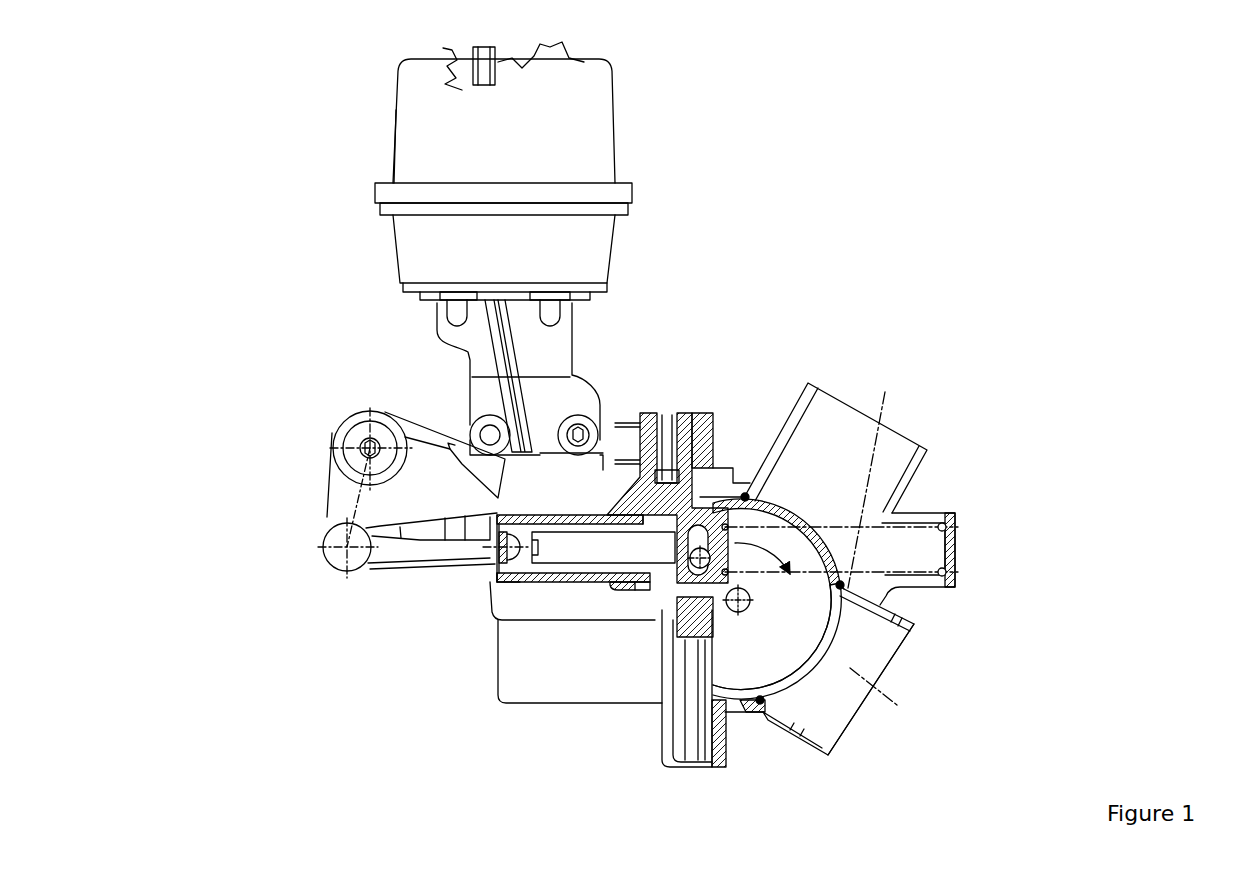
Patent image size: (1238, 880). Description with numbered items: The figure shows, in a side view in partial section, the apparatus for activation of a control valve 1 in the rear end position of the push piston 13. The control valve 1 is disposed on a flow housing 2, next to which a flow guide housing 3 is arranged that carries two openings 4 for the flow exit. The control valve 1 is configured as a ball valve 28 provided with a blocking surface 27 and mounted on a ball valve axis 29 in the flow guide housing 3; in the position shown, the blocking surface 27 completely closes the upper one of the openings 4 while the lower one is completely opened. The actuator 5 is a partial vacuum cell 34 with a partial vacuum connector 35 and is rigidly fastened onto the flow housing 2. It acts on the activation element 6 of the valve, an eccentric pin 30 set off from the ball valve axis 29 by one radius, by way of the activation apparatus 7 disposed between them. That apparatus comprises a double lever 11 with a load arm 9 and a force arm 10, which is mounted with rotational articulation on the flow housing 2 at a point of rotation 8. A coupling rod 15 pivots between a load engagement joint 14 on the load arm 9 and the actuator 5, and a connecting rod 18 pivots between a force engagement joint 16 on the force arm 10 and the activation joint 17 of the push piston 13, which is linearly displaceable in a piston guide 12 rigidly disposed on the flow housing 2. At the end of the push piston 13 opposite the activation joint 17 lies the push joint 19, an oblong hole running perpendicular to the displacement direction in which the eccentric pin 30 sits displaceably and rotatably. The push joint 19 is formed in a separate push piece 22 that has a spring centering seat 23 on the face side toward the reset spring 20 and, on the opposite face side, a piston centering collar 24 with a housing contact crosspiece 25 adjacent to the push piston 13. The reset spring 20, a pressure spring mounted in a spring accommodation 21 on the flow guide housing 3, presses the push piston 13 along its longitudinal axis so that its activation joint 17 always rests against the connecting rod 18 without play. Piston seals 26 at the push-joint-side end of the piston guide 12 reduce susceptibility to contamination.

The control valve 1 is at (955, 513).
The flow housing 2 is at (575, 667).
The flow guide housing 3 is at (916, 630).
The openings 4 is at (815, 490).
The actuator 5 is at (572, 132).
The activation element 6 is at (745, 497).
The activation apparatus 7 is at (713, 465).
The point of rotation 8 is at (357, 441).
The load arm 9 is at (497, 458).
The force arm 10 is at (353, 512).
The double lever 11 is at (402, 492).
The piston guide 12 is at (525, 582).
The push piston 13 is at (595, 547).
The load engagement joint 14 is at (497, 515).
The coupling rod 15 is at (515, 352).
The force engagement joint 16 is at (352, 585).
The activation joint 17 is at (502, 553).
The connecting rod 18 is at (430, 540).
The push joint 19 is at (728, 527).
The reset spring 20 is at (950, 566).
The spring accommodation 21 is at (955, 587).
The push piece 22 is at (714, 592).
The spring centering seat 23 is at (741, 604).
The piston centering collar 24 is at (680, 615).
The housing contact crosspiece 25 is at (648, 600).
The piston seals 26 is at (630, 588).
The blocking surface 27 is at (728, 572).
The ball valve 28 is at (818, 668).
The ball valve axis 29 is at (749, 612).
The eccentric pin 30 is at (772, 637).
The partial vacuum cell 34 is at (425, 140).
The partial vacuum connector 35 is at (497, 68).